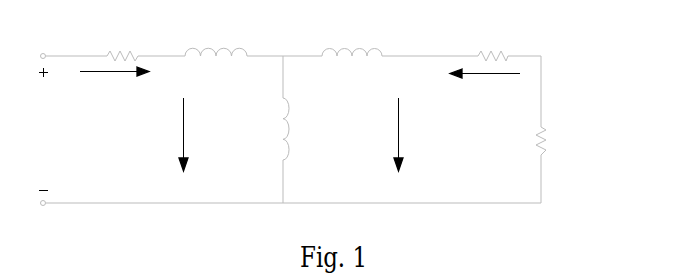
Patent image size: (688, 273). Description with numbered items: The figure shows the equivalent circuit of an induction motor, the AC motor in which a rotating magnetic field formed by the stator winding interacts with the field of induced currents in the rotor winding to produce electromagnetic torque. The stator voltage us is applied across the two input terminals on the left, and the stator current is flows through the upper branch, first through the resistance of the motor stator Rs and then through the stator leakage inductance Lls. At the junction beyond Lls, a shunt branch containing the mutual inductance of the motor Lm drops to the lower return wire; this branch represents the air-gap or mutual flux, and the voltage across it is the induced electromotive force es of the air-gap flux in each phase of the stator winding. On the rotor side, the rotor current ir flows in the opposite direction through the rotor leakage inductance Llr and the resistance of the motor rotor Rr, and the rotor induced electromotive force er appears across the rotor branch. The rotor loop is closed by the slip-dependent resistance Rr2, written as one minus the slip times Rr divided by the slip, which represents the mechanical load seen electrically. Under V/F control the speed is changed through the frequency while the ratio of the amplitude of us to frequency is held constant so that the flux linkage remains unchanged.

The resistance of the motor stator Rs is at (122, 44).
The stator leakage inductance Lls is at (216, 41).
The rotor leakage inductance Llr is at (352, 41).
The resistance of the motor rotor Rr is at (493, 44).
The mutual inductance of the motor Lm is at (301, 129).
The slip-dependent rotor resistance (1-s)Rr/s Rr2 is at (636, 140).
The stator current is is at (114, 84).
The rotor current ir is at (485, 84).
The induced electromotive force of the air-gap flux in the stator winding es is at (171, 134).
The rotor induced electromotive force er is at (410, 134).
The stator voltage us is at (46, 129).